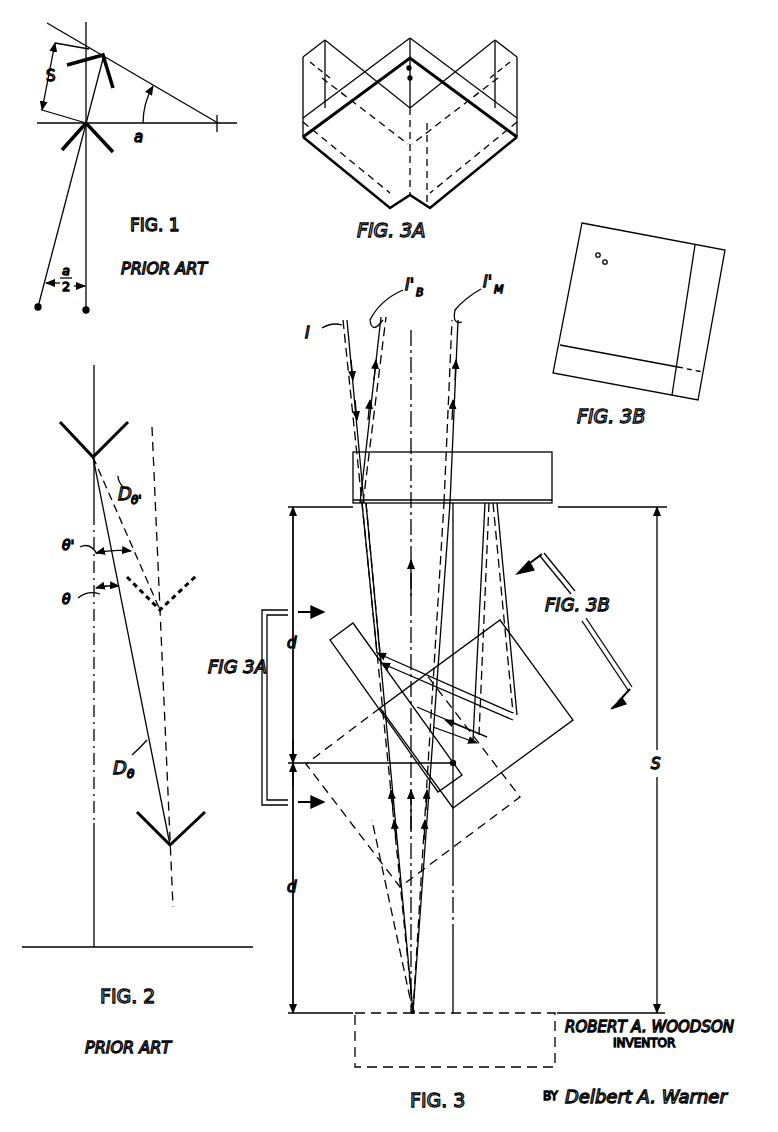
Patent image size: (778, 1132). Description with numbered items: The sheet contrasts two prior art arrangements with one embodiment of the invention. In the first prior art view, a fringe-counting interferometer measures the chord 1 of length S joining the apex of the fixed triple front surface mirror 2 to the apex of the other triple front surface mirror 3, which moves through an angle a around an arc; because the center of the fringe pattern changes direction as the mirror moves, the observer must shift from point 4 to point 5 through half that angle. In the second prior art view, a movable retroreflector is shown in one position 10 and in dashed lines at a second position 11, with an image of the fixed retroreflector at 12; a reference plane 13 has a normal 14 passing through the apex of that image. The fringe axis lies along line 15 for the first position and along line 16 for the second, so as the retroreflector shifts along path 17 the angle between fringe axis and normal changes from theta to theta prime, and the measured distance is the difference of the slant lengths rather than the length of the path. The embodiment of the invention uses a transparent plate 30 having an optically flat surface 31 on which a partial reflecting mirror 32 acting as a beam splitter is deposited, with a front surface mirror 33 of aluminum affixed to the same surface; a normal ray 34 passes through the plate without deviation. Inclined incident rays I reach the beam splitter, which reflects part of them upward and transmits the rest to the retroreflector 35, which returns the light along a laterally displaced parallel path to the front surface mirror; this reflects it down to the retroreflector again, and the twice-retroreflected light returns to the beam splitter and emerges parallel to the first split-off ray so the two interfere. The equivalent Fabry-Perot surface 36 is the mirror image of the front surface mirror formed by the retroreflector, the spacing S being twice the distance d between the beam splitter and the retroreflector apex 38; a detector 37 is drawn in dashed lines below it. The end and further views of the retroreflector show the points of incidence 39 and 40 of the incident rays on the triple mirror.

In FIG. 1, the chord 1 is at (93, 93).
In FIG. 1, the fixed triple front surface mirror 2 is at (107, 150).
In FIG. 1, the moving triple front surface mirror 3 is at (110, 65).
In FIG. 1, the observer starting point 4 is at (89, 312).
In FIG. 1, the observer end point 5 is at (38, 309).
In FIG. 2, the movable retroreflector first position 10 is at (190, 832).
In FIG. 2, the movable retroreflector second position 11 is at (178, 582).
In FIG. 2, the image of fixed retroreflector 12 is at (72, 422).
In FIG. 2, the reference plane 13 is at (70, 945).
In FIG. 2, the normal 14 is at (95, 822).
In FIG. 2, the fringe axis line 15 is at (140, 693).
In FIG. 2, the fringe axis line 16 is at (113, 485).
In FIG. 2, the path 17 is at (176, 690).
In FIG. 3, the transparent plate 30 is at (473, 467).
In FIG. 3, the optically flat surface 31 is at (490, 499).
In FIG. 3, the partial reflecting mirror 32 is at (362, 533).
In FIG. 3, the front surface mirror 33 is at (520, 508).
In FIG. 3, the normal ray 34 is at (412, 348).
In FIG. 3A, the retroreflector 35 is at (353, 178).
In FIG. 3B, the retroreflector 35 is at (713, 337).
In FIG. 3, the retroreflector 35 is at (530, 657).
In FIG. 3, the equivalent front surface mirror 36 is at (430, 1010).
In FIG. 3, the detector 37 is at (490, 1012).
In FIG. 3, the apex of retroreflector 38 is at (457, 762).
In FIG. 3A, the point of incidence 39 is at (409, 66).
In FIG. 3B, the point of incidence 39 is at (598, 253).
In FIG. 3A, the point of incidence 40 is at (411, 76).
In FIG. 3B, the point of incidence 40 is at (606, 260).